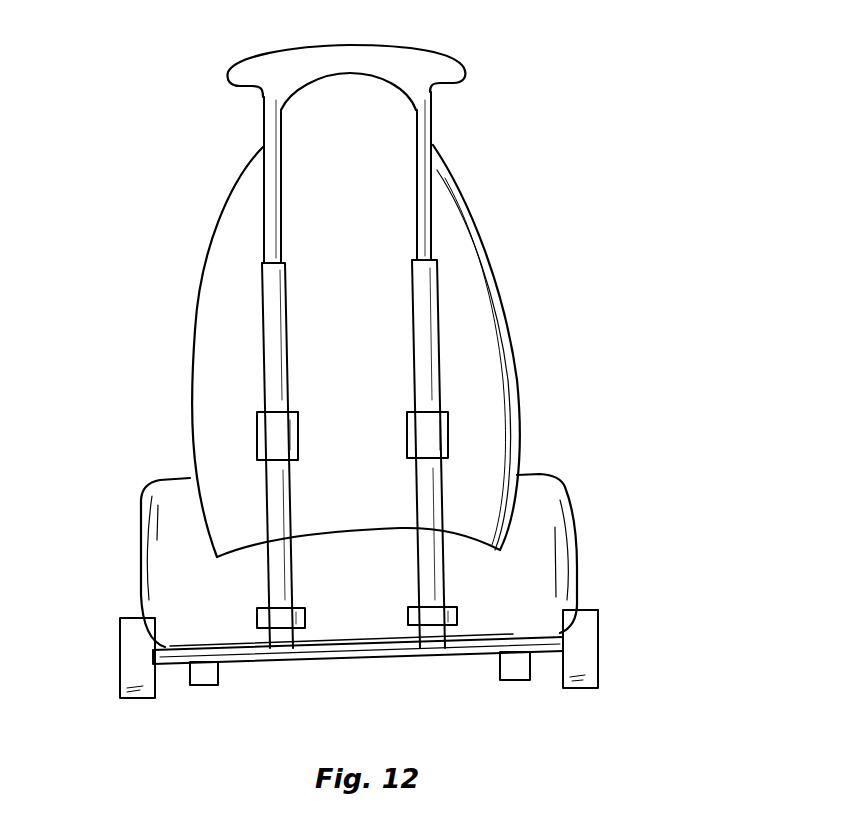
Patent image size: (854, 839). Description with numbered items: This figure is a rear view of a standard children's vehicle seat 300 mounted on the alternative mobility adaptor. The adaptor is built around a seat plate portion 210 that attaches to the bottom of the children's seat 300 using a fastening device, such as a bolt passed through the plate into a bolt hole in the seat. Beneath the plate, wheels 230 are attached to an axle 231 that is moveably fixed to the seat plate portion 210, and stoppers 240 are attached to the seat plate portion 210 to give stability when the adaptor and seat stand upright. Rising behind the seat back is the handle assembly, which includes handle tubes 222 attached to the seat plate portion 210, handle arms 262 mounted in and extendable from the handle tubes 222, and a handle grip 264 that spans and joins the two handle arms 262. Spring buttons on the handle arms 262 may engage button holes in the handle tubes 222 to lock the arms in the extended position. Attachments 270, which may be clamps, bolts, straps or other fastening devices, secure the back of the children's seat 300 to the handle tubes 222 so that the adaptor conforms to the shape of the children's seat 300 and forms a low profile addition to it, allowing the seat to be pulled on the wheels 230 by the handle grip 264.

The handle grip 264 is at (433, 63).
The handle arms 262 is at (280, 113).
The handle tubes 222 is at (272, 316).
The children's vehicle seat 300 is at (488, 372).
The attachments 270 is at (425, 435).
The seat plate portion 210 is at (468, 649).
The axle 231 is at (340, 652).
The wheels 230 is at (585, 645).
The stoppers 240 is at (205, 683).